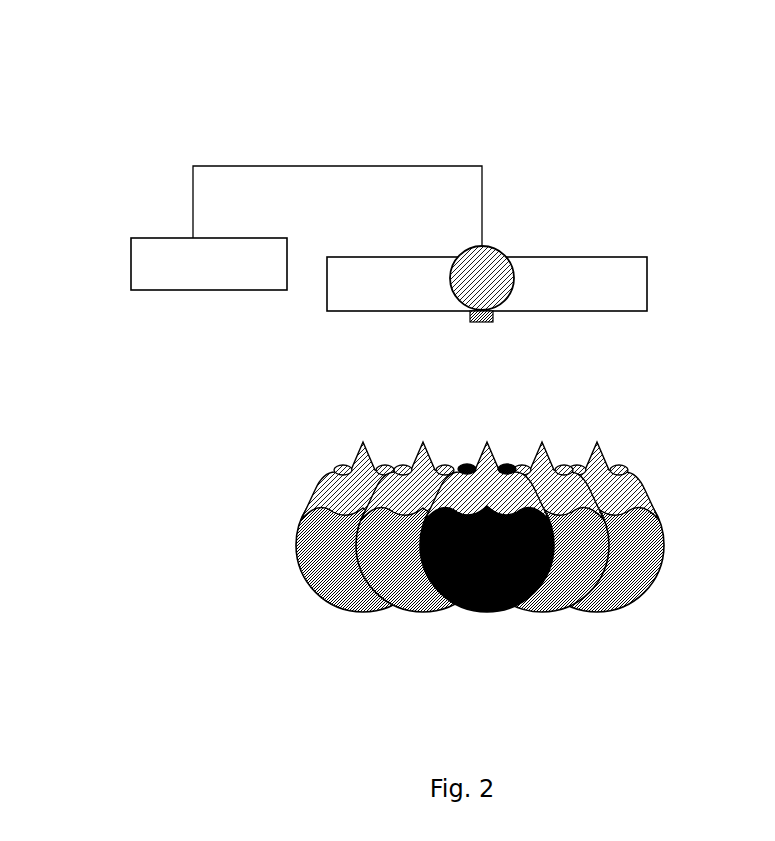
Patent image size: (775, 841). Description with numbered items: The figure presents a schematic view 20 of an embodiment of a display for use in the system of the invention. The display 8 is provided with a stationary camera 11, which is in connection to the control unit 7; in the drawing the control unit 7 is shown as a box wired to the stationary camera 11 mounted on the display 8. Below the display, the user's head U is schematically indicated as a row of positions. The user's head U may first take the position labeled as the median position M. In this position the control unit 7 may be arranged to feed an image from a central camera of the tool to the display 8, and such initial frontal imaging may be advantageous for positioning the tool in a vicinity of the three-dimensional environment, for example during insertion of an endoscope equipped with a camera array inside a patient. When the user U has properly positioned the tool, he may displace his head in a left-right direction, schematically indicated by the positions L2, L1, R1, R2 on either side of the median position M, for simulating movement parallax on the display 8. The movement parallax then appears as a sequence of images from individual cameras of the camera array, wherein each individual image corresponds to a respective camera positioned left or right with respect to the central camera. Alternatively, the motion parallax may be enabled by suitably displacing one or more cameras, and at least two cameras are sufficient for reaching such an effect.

The schematic view 20 is at (462, 82).
The control unit 7 is at (131, 268).
The display 8 is at (648, 265).
The stationary camera 11 is at (497, 250).
The user's head U is at (455, 556).
The left head position L2 is at (363, 508).
The left head position L1 is at (423, 508).
The median position M is at (487, 508).
The right head position R1 is at (542, 508).
The right head position R2 is at (597, 508).